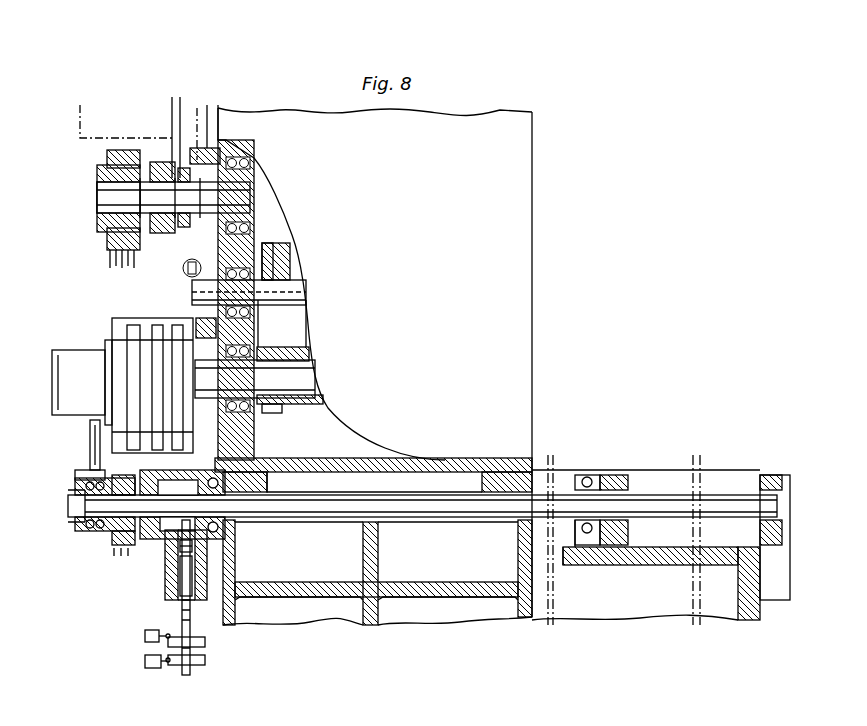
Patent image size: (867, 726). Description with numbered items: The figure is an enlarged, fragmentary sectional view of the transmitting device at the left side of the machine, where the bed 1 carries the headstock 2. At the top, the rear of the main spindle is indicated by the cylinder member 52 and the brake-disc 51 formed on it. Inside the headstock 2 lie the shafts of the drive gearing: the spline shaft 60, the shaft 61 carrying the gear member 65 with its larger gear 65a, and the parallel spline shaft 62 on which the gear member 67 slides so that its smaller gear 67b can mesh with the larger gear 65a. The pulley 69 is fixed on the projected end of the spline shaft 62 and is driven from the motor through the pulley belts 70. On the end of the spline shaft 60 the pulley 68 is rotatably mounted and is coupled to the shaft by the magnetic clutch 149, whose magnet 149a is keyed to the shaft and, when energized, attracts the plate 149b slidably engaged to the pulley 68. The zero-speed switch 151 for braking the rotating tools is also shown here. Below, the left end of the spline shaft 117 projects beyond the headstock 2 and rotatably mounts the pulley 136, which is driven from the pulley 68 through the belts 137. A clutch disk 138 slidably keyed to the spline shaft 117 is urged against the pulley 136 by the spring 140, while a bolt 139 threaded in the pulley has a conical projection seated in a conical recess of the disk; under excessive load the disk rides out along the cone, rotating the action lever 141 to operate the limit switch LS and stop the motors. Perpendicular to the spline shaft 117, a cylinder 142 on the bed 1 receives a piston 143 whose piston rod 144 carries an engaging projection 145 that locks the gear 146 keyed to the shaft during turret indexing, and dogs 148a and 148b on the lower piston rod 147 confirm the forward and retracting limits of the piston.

The bed 1 is at (470, 597).
The headstock 2 is at (375, 362).
The brake-disc 51 is at (162, 100).
The cylinder member 52 is at (80, 105).
The spline shaft 60 is at (262, 200).
The shaft 61 is at (300, 292).
The spline shaft 62 is at (312, 380).
The gear member 65 is at (290, 262).
The larger gear 65a is at (273, 243).
The gear member 67 is at (304, 405).
The smaller gear 67b is at (272, 413).
The pulley 68 is at (97, 210).
The pulley 69 is at (127, 335).
The pulley belts 70 is at (123, 318).
The spline shaft 117 is at (415, 512).
The pulley 136 is at (112, 545).
The belts 137 is at (110, 258).
The clutch disk 138 is at (135, 535).
The bolt 139 is at (150, 490).
The spring 140 is at (80, 531).
The action lever 141 is at (90, 455).
The cylinder 142 is at (197, 565).
The piston 143 is at (175, 590).
The piston rod 144 is at (165, 560).
The engaging projection 145 is at (196, 550).
The gear 146 is at (197, 475).
The lower piston rod 147 is at (182, 612).
The dog 148a is at (205, 642).
The dog 148b is at (205, 660).
The magnetic clutch 149 is at (155, 228).
The magnet 149a is at (165, 152).
The plate 149b is at (110, 235).
The zero-speed switch 151 is at (66, 380).
The limit switch LS is at (75, 478).